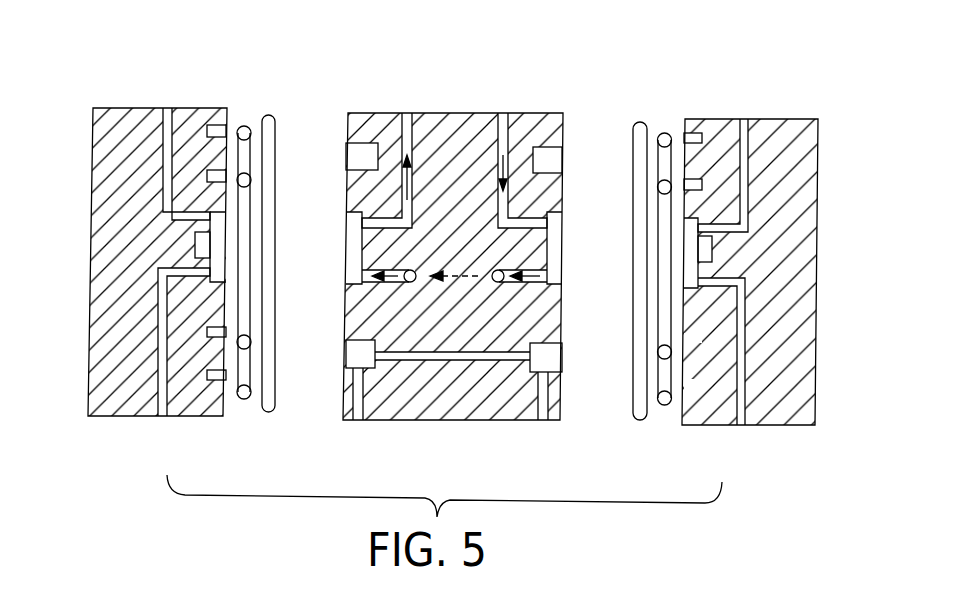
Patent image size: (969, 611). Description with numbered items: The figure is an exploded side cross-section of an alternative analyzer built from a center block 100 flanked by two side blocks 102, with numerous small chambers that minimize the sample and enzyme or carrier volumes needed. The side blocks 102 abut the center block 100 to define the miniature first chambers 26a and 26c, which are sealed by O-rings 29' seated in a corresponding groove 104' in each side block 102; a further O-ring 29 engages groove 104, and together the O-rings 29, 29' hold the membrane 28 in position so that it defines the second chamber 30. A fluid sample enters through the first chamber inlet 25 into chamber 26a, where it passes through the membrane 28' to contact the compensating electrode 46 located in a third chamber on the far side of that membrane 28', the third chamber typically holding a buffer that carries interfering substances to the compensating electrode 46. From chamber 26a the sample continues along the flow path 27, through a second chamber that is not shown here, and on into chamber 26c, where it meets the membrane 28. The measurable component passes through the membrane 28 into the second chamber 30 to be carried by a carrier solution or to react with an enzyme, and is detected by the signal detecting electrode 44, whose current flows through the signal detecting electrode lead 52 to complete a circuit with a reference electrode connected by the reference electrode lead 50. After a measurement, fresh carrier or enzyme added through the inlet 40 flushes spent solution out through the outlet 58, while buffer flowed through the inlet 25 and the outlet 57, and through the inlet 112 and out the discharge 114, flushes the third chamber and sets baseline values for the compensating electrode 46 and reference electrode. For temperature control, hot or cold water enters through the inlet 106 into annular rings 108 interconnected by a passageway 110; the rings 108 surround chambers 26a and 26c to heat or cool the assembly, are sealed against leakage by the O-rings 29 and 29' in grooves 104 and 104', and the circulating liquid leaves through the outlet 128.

The side block 102 is at (130, 108).
The groove 104 is at (446, 92).
The groove 104' is at (496, 123).
The inlet 40 is at (205, 123).
The signal detecting electrode 44 is at (196, 240).
The second chamber 30 is at (217, 248).
The signal detecting electrode lead 52 is at (205, 245).
The outlet 58 is at (157, 383).
The inlet 112 is at (744, 147).
The compensating electrode 46 is at (702, 246).
The reference electrode lead 50 is at (708, 248).
The discharge 114 is at (750, 395).
The membrane 28 is at (279, 219).
The membrane 28' is at (650, 242).
The O-ring 29 is at (466, 303).
The O-ring 29' is at (454, 264).
The center block 100 is at (392, 113).
The outlet 57 is at (418, 113).
The first chamber inlet 25 is at (500, 150).
The first chamber 26c is at (337, 240).
The first chamber 26a is at (556, 240).
The flow path 27 is at (510, 150).
The annular ring 108 is at (346, 158).
The passageway 110 is at (427, 352).
The outlet 128 is at (365, 385).
The inlet 106 is at (538, 392).